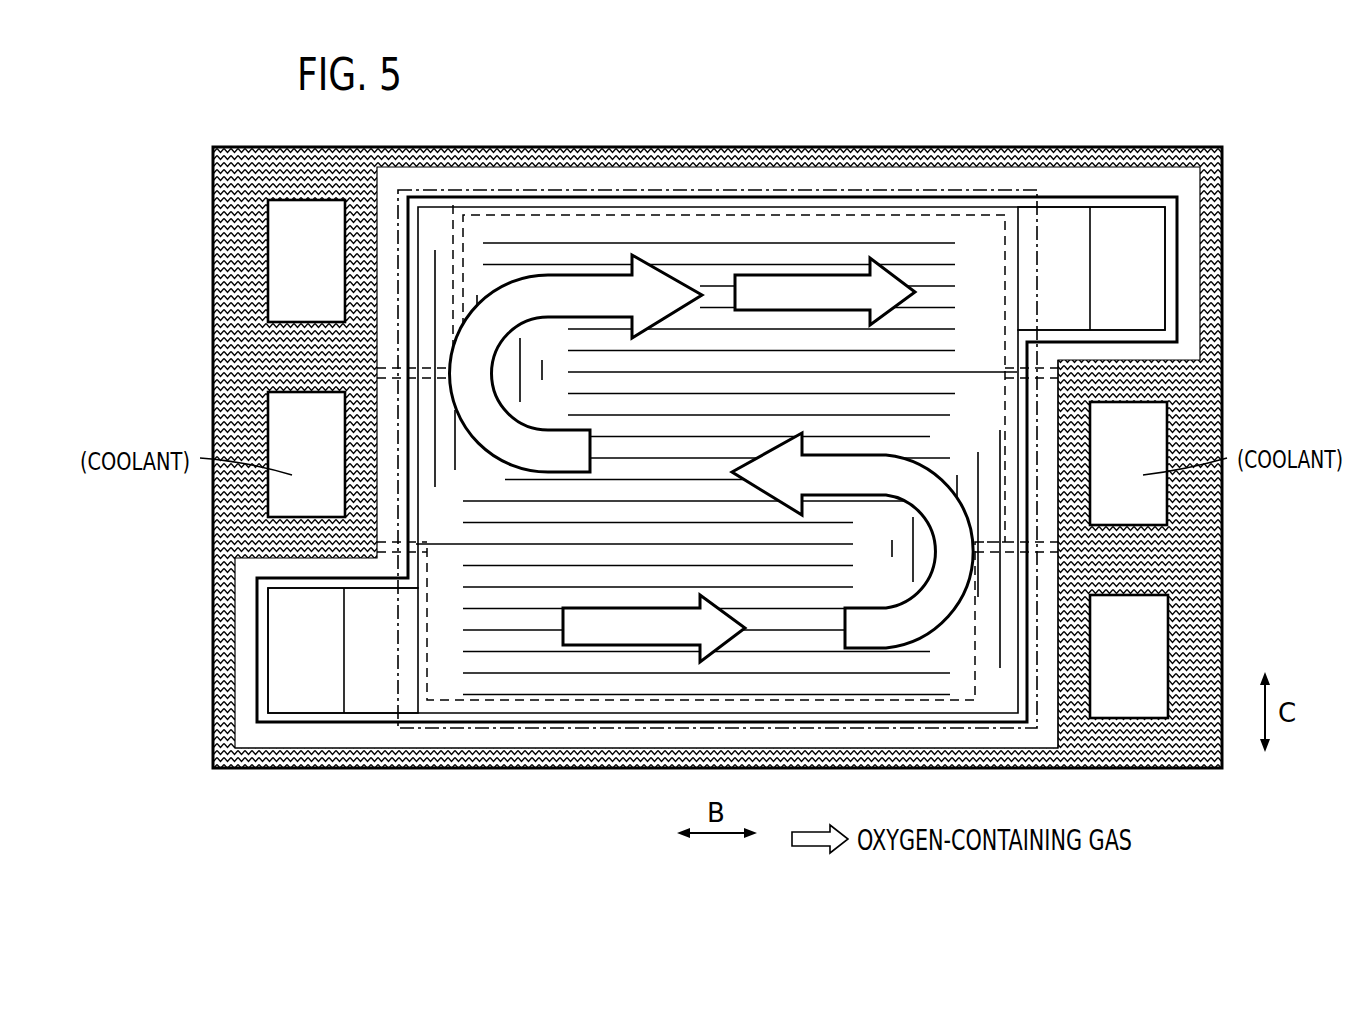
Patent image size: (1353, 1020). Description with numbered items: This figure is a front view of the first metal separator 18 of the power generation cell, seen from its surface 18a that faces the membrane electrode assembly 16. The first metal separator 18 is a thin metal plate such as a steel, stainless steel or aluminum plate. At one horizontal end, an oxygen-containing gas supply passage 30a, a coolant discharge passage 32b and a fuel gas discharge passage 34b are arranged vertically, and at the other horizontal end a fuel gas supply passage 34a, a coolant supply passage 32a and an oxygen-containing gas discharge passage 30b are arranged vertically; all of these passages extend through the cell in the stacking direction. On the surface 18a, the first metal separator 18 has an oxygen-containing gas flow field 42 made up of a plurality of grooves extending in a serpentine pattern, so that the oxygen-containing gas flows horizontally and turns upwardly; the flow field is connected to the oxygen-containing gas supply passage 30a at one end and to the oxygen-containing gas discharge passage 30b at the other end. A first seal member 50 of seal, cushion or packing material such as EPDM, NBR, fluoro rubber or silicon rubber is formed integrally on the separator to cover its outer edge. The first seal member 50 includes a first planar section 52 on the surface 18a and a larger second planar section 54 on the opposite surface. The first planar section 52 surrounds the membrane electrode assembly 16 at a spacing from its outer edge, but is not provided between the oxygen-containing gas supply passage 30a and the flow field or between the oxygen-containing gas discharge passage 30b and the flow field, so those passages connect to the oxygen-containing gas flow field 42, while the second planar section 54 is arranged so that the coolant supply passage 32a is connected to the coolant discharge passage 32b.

The membrane electrode assembly 16 is at (652, 190).
The first metal separator 18 is at (1102, 94).
The surface 18a is at (1002, 745).
The oxygen-containing gas supply passage 30a is at (343, 650).
The oxygen-containing gas discharge passage 30b is at (1091, 268).
The coolant supply passage 32a is at (1128, 463).
The coolant discharge passage 32b is at (306, 454).
The fuel gas supply passage 34a is at (1129, 656).
The fuel gas discharge passage 34b is at (306, 261).
The oxygen-containing gas flow field 42 is at (640, 660).
The first seal member 50 is at (1094, 146).
The first planar section 52 is at (1213, 583).
The second planar section 54 is at (472, 710).